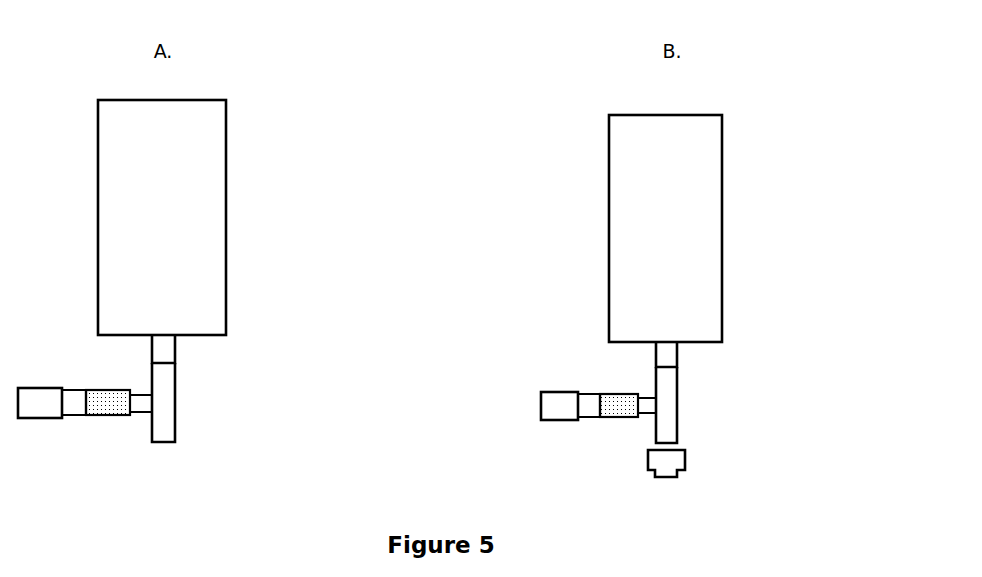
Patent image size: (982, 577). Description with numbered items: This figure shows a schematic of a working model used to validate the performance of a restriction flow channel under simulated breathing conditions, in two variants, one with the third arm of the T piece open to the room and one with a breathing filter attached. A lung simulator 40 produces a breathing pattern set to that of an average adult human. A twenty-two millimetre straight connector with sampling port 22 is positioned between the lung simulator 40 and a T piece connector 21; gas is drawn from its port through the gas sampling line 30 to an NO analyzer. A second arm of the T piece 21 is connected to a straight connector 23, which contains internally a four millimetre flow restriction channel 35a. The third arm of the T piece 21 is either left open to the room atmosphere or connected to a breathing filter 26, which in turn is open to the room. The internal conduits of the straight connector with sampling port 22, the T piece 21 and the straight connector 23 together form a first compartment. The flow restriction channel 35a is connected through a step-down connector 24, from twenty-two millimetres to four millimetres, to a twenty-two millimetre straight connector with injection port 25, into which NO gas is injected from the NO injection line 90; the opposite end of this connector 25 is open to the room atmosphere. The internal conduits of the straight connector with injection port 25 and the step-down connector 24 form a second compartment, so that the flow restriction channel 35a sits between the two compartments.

The lung simulator 40 is at (410, 221).
The straight connector with sampling port 22 is at (401, 351).
The T piece connector 21 is at (180, 425).
The gas sampling line 30 is at (167, 351).
The step-down connector 24 is at (331, 392).
The straight connector 23 is at (371, 392).
The flow restriction channel 35a is at (100, 405).
The straight connector with injection port 25 is at (57, 413).
The NO injection line 90 is at (40, 386).
The breathing filter 26 is at (683, 472).